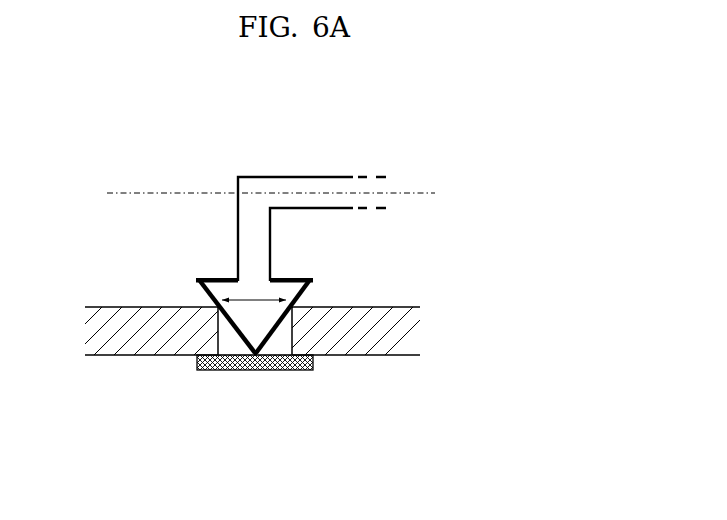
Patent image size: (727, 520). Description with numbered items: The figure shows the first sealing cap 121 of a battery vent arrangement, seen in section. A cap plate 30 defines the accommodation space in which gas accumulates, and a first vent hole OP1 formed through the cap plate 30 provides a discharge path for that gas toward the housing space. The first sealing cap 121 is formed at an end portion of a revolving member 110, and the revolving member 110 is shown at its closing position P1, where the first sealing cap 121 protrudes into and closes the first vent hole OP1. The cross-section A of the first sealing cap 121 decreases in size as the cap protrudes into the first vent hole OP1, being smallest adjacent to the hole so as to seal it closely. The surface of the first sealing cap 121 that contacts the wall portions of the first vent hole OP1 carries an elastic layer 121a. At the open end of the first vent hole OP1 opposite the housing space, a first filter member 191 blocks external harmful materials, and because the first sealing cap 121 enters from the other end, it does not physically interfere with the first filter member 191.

The revolving member 110 is at (331, 176).
The first sealing cap 121 is at (212, 290).
The elastic layer 121a is at (305, 296).
The cross-section A is at (257, 300).
The closing position P1 is at (260, 191).
The cap plate 30 is at (156, 362).
The first vent hole OP1 is at (292, 338).
The first filter member 191 is at (287, 372).